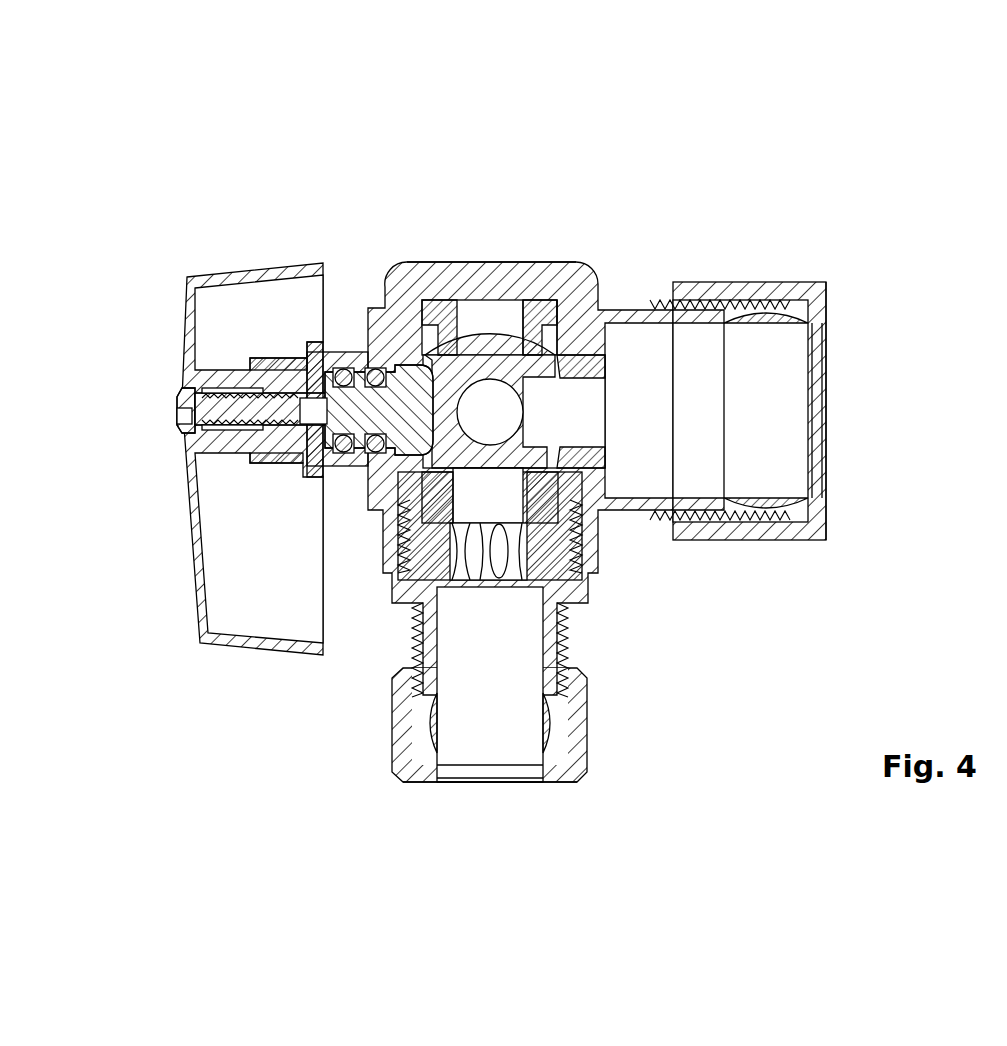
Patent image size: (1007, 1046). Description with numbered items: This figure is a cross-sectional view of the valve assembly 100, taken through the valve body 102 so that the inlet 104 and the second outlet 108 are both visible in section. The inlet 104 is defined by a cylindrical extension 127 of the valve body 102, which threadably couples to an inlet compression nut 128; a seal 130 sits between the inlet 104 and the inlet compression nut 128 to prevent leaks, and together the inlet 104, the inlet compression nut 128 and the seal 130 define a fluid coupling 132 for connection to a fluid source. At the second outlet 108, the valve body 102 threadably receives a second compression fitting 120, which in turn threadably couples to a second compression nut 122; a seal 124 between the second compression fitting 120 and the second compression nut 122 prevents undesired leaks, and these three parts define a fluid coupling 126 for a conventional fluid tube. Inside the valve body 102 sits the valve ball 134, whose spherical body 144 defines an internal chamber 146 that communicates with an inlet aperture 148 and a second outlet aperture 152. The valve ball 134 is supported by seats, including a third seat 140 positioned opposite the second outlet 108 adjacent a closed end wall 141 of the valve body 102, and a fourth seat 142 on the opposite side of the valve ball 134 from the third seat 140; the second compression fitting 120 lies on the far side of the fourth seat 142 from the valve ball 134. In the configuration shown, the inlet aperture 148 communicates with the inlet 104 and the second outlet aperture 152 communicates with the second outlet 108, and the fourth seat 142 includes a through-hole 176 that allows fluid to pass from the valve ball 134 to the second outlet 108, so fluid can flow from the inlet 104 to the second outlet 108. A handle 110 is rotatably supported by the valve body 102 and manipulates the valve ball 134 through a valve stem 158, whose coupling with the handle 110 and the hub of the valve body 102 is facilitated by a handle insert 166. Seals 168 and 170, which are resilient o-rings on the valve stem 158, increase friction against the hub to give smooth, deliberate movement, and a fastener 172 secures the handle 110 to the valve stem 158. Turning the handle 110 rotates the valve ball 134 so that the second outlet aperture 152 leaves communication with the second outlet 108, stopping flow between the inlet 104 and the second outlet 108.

The valve assembly 100 is at (688, 108).
The valve body 102 is at (392, 270).
The inlet 104 is at (865, 433).
The second outlet 108 is at (501, 802).
The handle 110 is at (195, 600).
The second compression fitting 120 is at (567, 640).
The second compression nut 122 is at (583, 718).
The seal 124 is at (415, 735).
The fluid coupling 126 is at (414, 818).
The cylindrical extension 127 is at (663, 300).
The inlet compression nut 128 is at (773, 540).
The seal 130 is at (776, 305).
The fluid coupling 132 is at (870, 280).
The valve ball 134 is at (489, 318).
The third seat 140 is at (562, 330).
The closed end wall 141 is at (418, 262).
The fourth seat 142 is at (570, 517).
The spherical body 144 is at (522, 345).
The internal chamber 146 is at (487, 388).
The inlet aperture 148 is at (580, 383).
The second outlet aperture 152 is at (567, 580).
The valve stem 158 is at (362, 375).
The handle insert 166 is at (253, 350).
The seal 168 is at (332, 372).
The seal 170 is at (365, 477).
The fastener 172 is at (180, 418).
The through-hole 176 is at (478, 522).